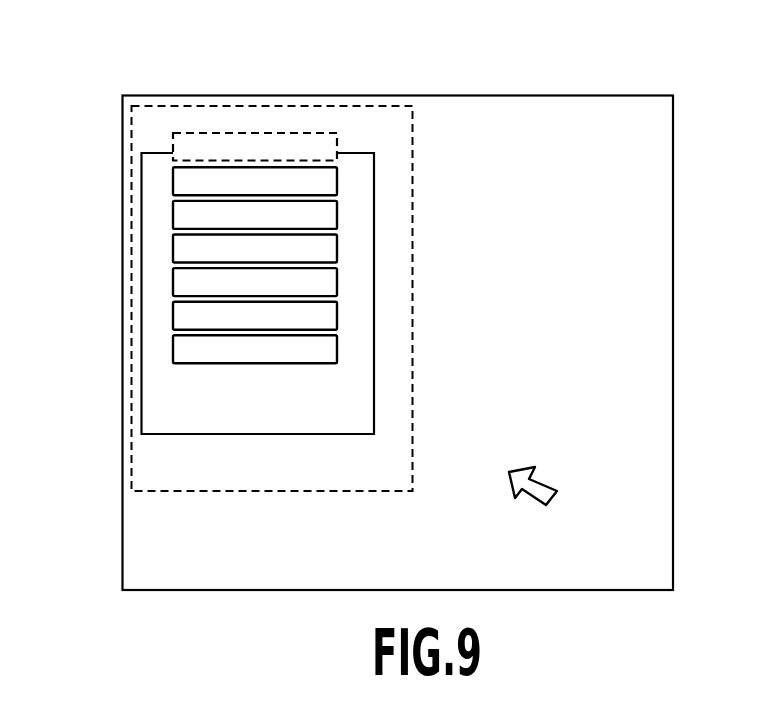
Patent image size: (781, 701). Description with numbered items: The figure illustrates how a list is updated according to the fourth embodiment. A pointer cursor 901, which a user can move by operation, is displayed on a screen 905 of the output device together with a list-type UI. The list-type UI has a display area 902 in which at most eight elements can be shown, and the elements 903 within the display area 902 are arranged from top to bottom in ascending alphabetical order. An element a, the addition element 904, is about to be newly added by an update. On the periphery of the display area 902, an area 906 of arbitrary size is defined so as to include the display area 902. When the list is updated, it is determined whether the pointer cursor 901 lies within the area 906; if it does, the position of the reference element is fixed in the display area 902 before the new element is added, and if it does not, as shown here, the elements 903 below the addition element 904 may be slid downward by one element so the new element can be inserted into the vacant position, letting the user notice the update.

The pointer cursor 901 is at (540, 480).
The display area 902 is at (374, 208).
The elements 903 is at (163, 167).
The addition element 904 is at (285, 133).
The screen 905 is at (673, 132).
The area 906 is at (413, 300).